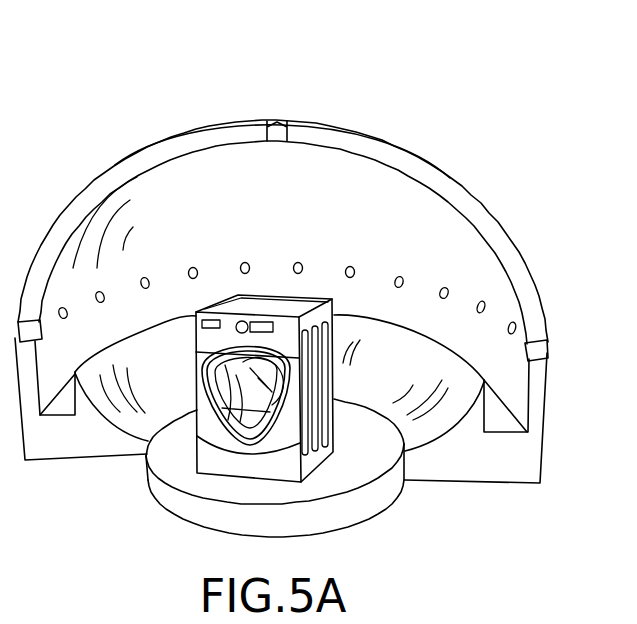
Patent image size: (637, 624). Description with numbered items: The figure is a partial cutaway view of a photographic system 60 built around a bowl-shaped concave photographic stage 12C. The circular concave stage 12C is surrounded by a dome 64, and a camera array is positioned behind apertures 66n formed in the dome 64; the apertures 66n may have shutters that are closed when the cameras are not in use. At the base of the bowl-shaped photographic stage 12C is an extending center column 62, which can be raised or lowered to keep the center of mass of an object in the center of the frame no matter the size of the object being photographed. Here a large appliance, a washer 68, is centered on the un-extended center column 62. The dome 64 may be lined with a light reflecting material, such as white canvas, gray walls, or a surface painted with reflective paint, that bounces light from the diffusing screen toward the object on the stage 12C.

The photographic system 60 is at (305, 277).
The extending center column 62 is at (177, 465).
The dome 64 is at (223, 180).
The apertures 66n is at (488, 306).
The washer 68 is at (333, 339).
The bowl-shaped concave photographic stage 12C is at (138, 350).